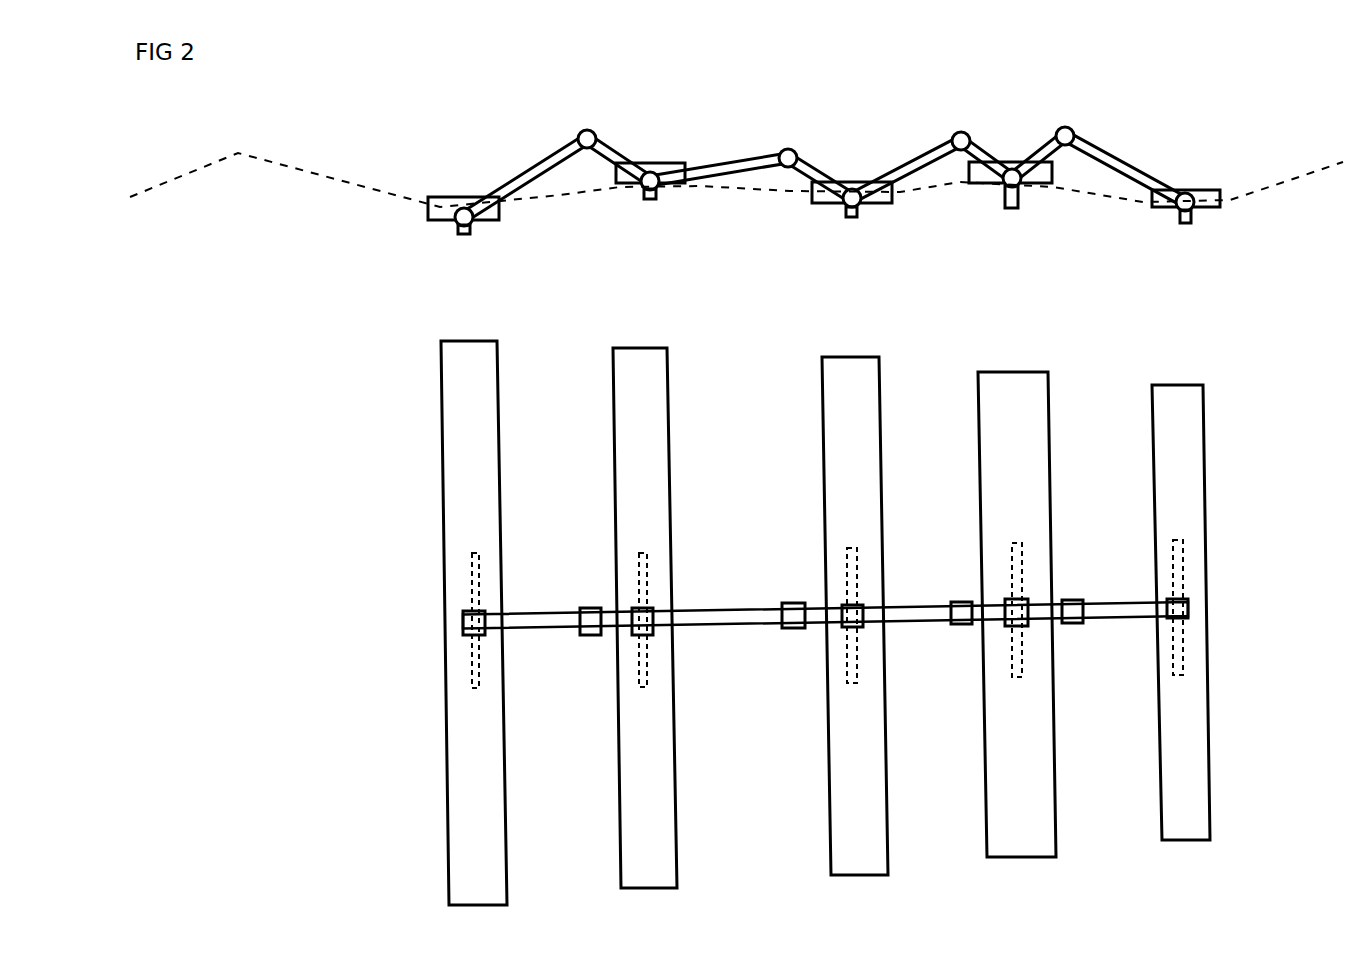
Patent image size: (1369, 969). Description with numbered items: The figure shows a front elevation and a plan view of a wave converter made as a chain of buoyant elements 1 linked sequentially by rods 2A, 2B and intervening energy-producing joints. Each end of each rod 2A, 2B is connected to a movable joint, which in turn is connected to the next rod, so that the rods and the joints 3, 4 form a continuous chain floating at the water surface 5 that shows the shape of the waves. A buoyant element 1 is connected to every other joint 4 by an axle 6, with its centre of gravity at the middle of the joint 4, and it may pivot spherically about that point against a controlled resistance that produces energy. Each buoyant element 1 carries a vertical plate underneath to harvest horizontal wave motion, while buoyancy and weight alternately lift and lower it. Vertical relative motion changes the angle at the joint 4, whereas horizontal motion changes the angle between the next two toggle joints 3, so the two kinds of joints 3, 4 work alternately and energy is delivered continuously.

The buoyant element 1 is at (458, 400).
The rod 2A is at (607, 150).
The rod 2B is at (743, 165).
The toggle joint 3 is at (792, 603).
The joint 4 is at (1173, 603).
The water surface 5 is at (1293, 178).
The axle 6 is at (473, 673).